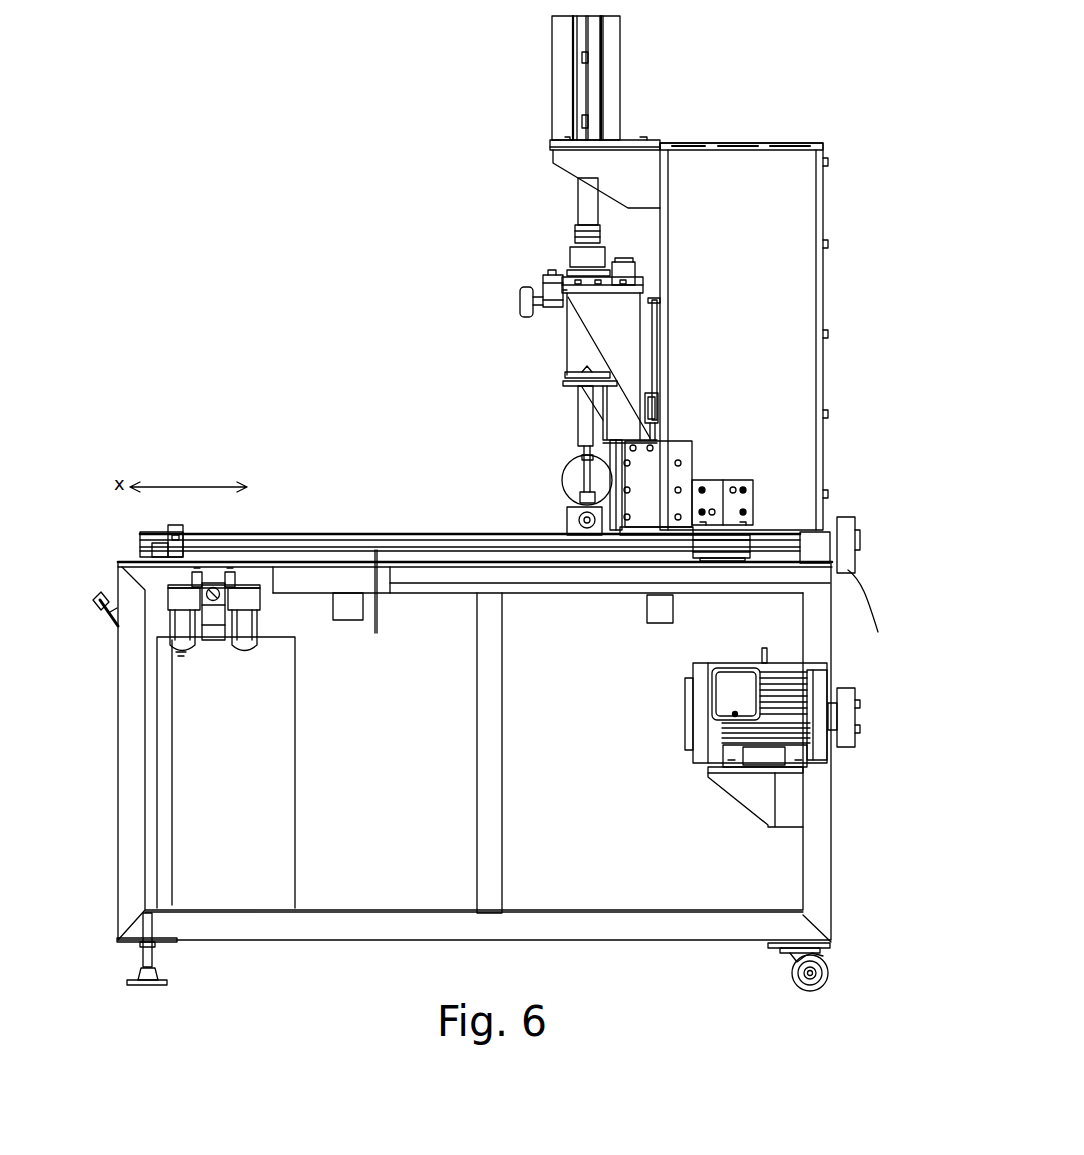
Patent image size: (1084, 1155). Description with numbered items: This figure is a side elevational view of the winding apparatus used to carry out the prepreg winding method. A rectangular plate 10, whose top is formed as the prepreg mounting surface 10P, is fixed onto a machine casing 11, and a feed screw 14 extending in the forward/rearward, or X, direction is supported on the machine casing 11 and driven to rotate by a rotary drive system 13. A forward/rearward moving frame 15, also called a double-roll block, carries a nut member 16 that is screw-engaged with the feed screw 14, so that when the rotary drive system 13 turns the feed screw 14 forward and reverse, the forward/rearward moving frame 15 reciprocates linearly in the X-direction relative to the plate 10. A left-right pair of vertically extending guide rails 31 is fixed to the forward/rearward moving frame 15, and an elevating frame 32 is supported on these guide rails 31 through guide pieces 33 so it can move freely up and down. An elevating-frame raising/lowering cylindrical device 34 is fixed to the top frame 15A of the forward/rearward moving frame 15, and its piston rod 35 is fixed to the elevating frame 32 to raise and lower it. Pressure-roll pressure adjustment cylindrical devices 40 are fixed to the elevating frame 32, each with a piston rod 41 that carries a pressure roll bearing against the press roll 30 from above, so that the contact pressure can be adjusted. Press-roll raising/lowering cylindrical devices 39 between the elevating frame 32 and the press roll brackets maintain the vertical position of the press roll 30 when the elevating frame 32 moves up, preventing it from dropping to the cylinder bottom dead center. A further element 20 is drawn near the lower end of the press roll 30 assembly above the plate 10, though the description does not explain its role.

The elevating-frame raising/lowering cylindrical device 34 is at (613, 77).
The forward/rearward moving frame 15 is at (800, 195).
The top frame 15A is at (742, 142).
The piston rod 35 is at (582, 203).
The press-roll raising/lowering cylindrical device 39 is at (628, 277).
The elevating frame 32 is at (642, 292).
The pressure-roll pressure adjustment cylindrical device 40 is at (575, 323).
The guide rail 31 is at (658, 333).
The guide piece 33 is at (653, 410).
The piston rod 41 is at (588, 413).
The press roll 30 is at (575, 468).
The holder 20 is at (578, 520).
The nut member 16 is at (737, 535).
The prepreg mounting surface 10P is at (358, 532).
The plate 10 is at (485, 556).
The feed screw 14 is at (375, 604).
The machine casing 11 is at (488, 763).
The rotary drive system 13 is at (810, 683).